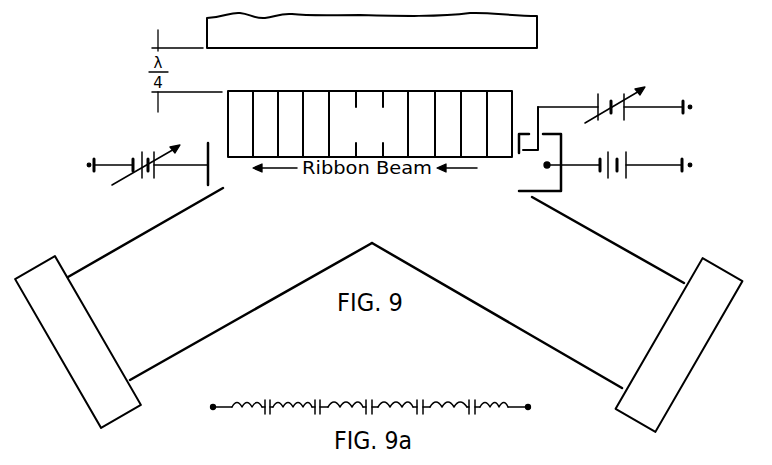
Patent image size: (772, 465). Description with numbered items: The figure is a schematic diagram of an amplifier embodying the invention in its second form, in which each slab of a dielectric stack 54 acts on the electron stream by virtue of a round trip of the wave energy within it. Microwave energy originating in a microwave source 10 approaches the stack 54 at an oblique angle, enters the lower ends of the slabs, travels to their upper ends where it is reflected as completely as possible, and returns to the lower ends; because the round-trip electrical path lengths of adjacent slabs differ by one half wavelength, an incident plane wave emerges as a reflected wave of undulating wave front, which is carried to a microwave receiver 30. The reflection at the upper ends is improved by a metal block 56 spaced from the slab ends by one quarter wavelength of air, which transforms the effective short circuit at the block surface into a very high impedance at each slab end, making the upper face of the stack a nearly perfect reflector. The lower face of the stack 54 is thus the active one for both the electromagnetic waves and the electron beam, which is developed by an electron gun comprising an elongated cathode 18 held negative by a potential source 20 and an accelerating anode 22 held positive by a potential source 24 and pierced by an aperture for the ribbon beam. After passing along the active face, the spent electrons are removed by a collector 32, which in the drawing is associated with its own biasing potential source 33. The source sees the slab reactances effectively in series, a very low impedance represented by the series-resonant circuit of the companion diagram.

The microwave source 10 is at (702, 367).
The cathode 18 is at (547, 166).
The potential source 20 is at (618, 180).
The accelerating anode 22 is at (520, 173).
The potential source 24 is at (603, 93).
The microwave receiver 30 is at (65, 373).
The collector 32 is at (201, 177).
The variable bias source 33 is at (150, 152).
The stack 54 is at (386, 132).
The metal block 56 is at (386, 42).